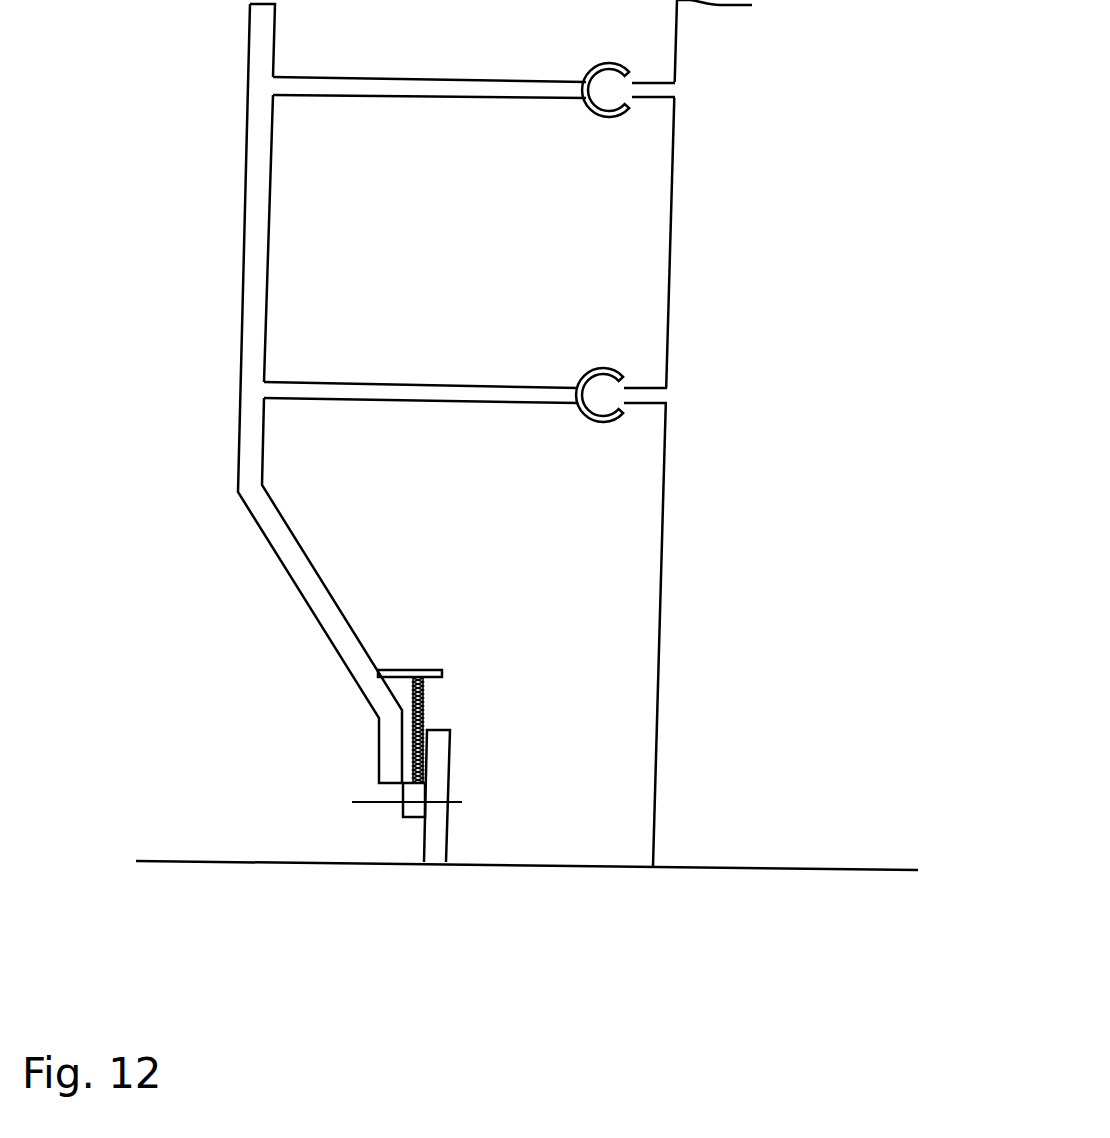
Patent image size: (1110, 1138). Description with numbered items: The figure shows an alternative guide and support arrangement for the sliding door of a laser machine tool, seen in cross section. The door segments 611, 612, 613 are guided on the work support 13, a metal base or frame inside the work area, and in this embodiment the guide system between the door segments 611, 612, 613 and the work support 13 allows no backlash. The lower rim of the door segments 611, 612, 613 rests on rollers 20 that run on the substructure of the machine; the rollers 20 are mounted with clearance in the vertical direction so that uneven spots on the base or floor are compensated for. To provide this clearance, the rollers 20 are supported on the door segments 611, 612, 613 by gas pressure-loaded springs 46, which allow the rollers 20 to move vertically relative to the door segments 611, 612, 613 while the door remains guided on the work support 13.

The work support 13 is at (818, 453).
The rollers 20 is at (442, 763).
The gas pressure-loaded springs 46 is at (423, 698).
The door segment 611 is at (152, 158).
The door segment 612 is at (236, 218).
The door segment 613 is at (152, 240).